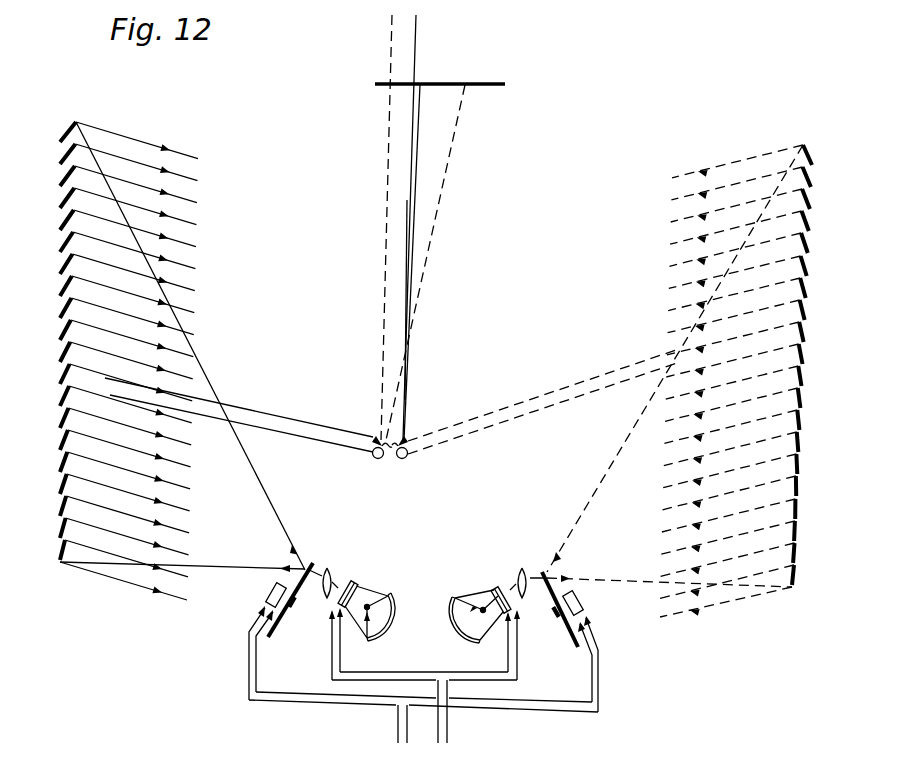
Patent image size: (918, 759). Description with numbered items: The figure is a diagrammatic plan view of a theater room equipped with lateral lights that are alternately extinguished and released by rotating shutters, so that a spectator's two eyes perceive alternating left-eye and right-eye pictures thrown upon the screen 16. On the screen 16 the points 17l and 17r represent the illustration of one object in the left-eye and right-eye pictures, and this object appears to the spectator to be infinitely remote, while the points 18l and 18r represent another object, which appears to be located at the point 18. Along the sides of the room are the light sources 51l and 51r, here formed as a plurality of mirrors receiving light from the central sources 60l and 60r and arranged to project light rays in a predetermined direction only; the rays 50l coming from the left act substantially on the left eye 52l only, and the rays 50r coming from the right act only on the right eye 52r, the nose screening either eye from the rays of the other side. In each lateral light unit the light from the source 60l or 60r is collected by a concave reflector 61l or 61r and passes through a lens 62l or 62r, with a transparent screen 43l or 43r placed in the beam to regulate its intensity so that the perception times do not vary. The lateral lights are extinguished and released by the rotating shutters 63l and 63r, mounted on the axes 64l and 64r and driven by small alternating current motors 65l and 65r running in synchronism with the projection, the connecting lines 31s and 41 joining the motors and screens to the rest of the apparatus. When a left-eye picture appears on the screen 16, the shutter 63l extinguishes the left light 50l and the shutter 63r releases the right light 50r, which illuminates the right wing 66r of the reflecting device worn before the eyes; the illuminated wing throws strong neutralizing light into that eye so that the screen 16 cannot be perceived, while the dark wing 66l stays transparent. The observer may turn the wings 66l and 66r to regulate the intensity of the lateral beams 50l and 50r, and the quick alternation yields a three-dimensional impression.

The screen 16 is at (507, 84).
The left-eye picture point 17l is at (388, 80).
The right-eye picture point 17r is at (416, 82).
The left-eye picture point 18l is at (462, 92).
The right-eye picture point 18r is at (421, 87).
The apparent object point 18 is at (412, 318).
The left lateral light rays 50l is at (144, 361).
The right lateral light rays 50r is at (725, 381).
The left light sources 51l is at (54, 341).
The right light sources 51r is at (814, 365).
The left eye 52l is at (245, 431).
The right eye 52r is at (539, 417).
The left wing of reflecting device 66l is at (372, 439).
The right wing of reflecting device 66r is at (407, 439).
The left central light source 60l is at (369, 605).
The right central light source 60r is at (481, 608).
The left concave mirror 61l is at (385, 617).
The right concave mirror 61r is at (464, 623).
The left lens 62l is at (333, 562).
The right lens 62r is at (524, 570).
The left rotating shutter 63l is at (283, 628).
The right rotating shutter 63r is at (567, 640).
The left shutter axis 64l is at (296, 604).
The right shutter axis 64r is at (553, 614).
The left alternating current motor 65l is at (266, 592).
The right alternating current motor 65r is at (586, 600).
The left transparent screen 43l is at (357, 580).
The right transparent screen 43r is at (498, 587).
The signal line 31s is at (423, 721).
The supply line 41 is at (424, 710).